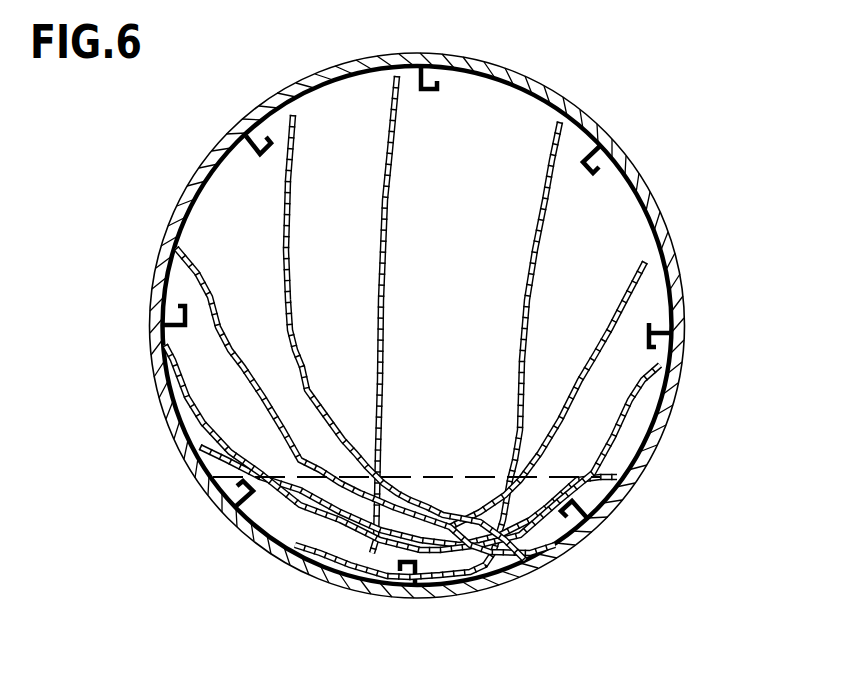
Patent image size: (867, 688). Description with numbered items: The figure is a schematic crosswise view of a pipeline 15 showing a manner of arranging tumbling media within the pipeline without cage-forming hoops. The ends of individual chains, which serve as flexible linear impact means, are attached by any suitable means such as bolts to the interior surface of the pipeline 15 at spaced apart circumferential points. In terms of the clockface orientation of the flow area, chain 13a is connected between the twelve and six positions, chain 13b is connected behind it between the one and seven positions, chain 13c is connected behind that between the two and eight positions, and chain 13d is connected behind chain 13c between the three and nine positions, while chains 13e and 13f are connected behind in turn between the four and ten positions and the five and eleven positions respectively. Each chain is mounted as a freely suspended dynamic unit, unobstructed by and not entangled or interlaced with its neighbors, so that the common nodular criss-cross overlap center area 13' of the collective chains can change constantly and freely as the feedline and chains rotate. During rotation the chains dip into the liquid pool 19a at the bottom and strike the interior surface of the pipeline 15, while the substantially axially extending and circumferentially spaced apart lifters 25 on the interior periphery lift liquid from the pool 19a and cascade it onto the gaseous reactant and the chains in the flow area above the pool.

The chain 13a is at (394, 68).
The chain 13b is at (562, 118).
The chain 13c is at (648, 258).
The chain 13d is at (166, 352).
The chain 13e is at (176, 248).
The chain 13f is at (292, 110).
The common nodular criss-cross overlap center area 13' is at (455, 429).
The pipeline 15 is at (684, 296).
The liquid pool 19a is at (411, 475).
The lifter 25 is at (436, 62).